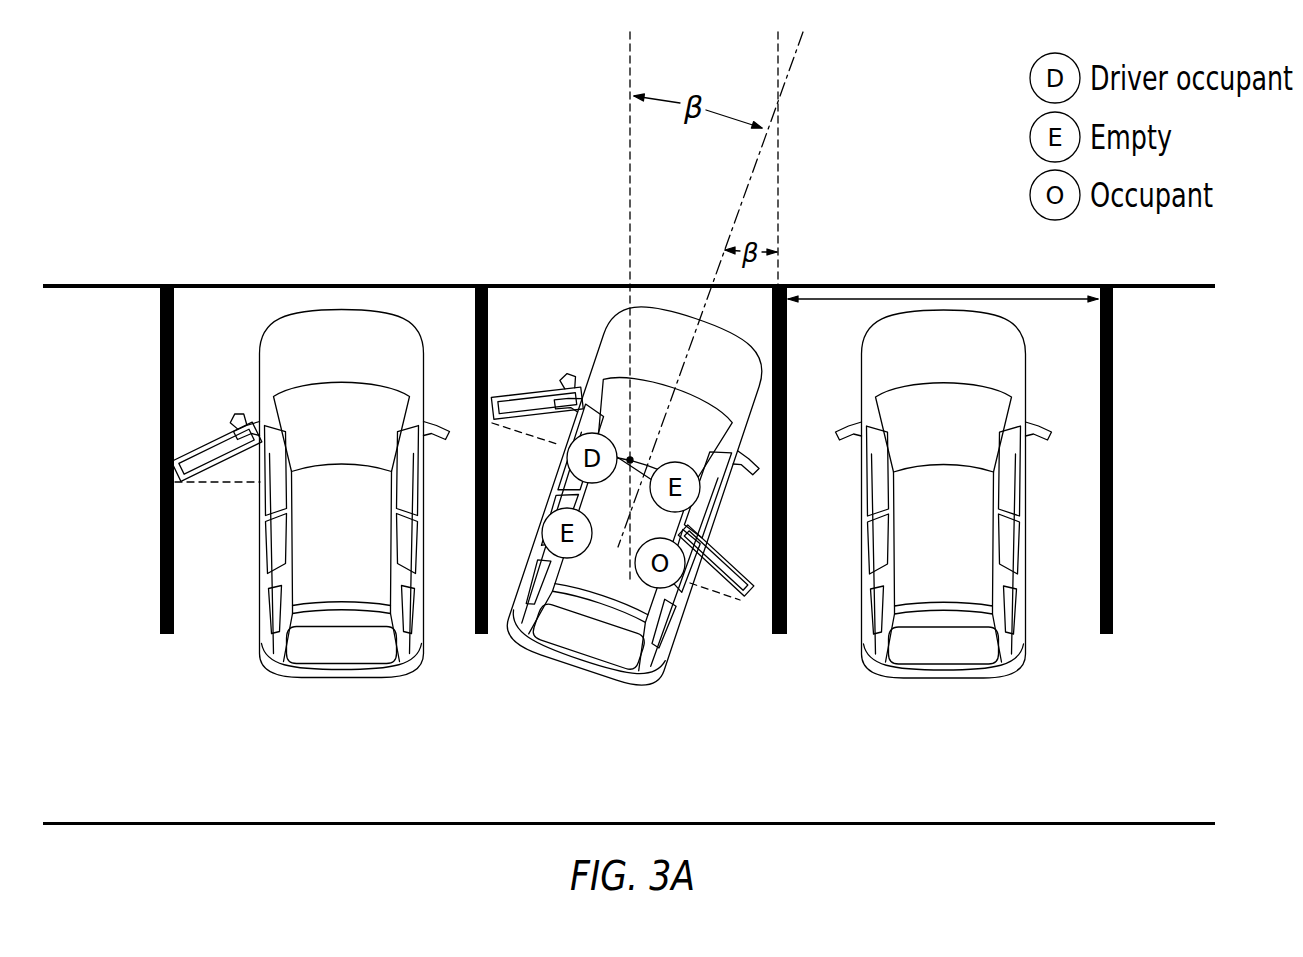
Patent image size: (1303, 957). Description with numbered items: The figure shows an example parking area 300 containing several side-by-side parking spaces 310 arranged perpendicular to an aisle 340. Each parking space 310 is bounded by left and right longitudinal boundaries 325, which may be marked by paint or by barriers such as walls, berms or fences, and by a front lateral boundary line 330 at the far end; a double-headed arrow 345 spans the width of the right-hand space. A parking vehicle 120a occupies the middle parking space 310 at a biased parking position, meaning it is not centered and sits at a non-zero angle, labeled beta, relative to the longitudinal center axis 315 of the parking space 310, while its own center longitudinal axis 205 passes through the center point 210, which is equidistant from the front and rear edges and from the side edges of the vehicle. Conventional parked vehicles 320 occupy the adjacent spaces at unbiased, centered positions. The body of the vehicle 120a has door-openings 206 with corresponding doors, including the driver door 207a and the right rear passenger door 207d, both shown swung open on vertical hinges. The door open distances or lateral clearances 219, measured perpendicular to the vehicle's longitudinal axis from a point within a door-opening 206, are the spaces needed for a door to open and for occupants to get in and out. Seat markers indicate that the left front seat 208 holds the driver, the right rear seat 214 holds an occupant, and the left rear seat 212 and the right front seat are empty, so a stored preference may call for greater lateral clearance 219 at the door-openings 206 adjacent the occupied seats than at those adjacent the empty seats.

The parking area 300 is at (205, 170).
The front lateral boundary line 330 is at (335, 283).
The driving aisle 340 is at (348, 755).
The longitudinal boundary line 325 is at (164, 637).
The parking space 310 is at (235, 323).
The parking space width 345 is at (945, 297).
The parked vehicle 320 is at (358, 548).
The parking vehicle 120a is at (628, 582).
The driver door 207a is at (213, 440).
The right rear passenger door 207d is at (744, 585).
The door open distance 219 is at (225, 487).
The door-opening 206 is at (550, 472).
The left front seat 208 is at (606, 357).
The center longitudinal axis 205 is at (567, 302).
The longitudinal center axis of parking space 315 is at (629, 66).
The center point 210 is at (641, 478).
The left rear seat 212 is at (548, 635).
The right rear seat 214 is at (650, 593).